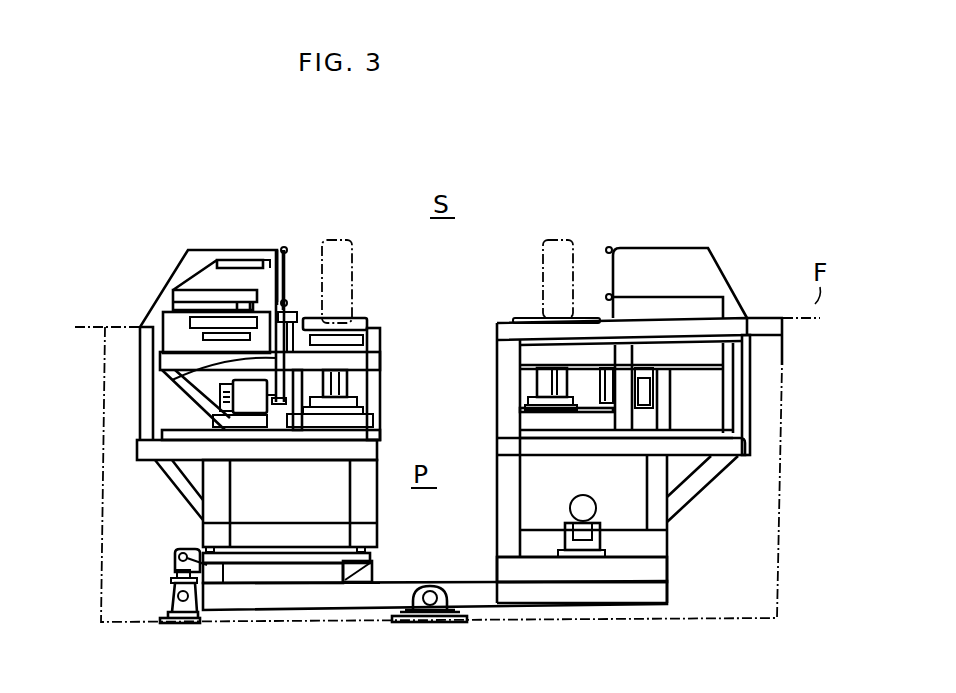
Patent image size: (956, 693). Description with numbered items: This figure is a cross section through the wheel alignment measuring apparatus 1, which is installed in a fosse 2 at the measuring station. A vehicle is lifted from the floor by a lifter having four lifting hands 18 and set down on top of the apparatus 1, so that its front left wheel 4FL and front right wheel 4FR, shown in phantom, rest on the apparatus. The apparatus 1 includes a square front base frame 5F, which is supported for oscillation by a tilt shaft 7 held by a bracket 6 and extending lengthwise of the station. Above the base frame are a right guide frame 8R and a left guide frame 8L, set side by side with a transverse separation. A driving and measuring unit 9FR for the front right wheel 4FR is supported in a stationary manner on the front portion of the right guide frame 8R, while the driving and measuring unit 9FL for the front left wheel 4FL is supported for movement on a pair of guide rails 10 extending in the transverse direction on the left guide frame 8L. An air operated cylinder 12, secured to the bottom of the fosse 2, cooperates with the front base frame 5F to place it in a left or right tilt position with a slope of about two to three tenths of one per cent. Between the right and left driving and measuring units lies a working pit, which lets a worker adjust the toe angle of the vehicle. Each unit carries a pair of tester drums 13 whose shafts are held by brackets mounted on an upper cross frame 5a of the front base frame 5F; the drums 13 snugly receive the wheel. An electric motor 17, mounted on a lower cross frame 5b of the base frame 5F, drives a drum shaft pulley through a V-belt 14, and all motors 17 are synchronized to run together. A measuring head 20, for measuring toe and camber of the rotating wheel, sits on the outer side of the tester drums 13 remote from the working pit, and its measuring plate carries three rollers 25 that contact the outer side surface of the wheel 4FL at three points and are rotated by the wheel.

The wheel alignment measuring apparatus 1 is at (740, 197).
The fosse 2 is at (100, 590).
The front left wheel 4FL is at (337, 238).
The front right wheel 4FR is at (526, 243).
The upper cross frame 5a is at (172, 360).
The lower cross frame 5b is at (187, 453).
The front base frame 5F is at (548, 605).
The bracket 6 is at (455, 662).
The tilt shaft 7 is at (337, 583).
The left guide frame 8L is at (372, 572).
The right guide frame 8R is at (667, 565).
The driving and measuring unit for front left wheel 9FL is at (386, 358).
The driving and measuring unit for front right wheel 9FR is at (491, 346).
The guide rail 10 is at (245, 565).
The air operated cylinder 12 is at (173, 587).
The tester drum 13 is at (367, 318).
The V-belt 14 is at (230, 378).
The electric motor 17 is at (255, 430).
The lifting hand 18 is at (307, 430).
The measuring head 20 is at (203, 263).
The roller 25 is at (285, 248).